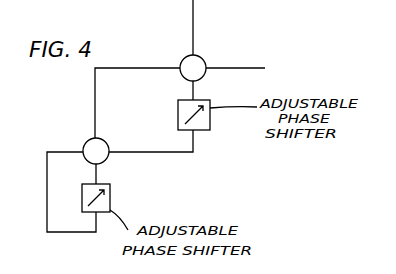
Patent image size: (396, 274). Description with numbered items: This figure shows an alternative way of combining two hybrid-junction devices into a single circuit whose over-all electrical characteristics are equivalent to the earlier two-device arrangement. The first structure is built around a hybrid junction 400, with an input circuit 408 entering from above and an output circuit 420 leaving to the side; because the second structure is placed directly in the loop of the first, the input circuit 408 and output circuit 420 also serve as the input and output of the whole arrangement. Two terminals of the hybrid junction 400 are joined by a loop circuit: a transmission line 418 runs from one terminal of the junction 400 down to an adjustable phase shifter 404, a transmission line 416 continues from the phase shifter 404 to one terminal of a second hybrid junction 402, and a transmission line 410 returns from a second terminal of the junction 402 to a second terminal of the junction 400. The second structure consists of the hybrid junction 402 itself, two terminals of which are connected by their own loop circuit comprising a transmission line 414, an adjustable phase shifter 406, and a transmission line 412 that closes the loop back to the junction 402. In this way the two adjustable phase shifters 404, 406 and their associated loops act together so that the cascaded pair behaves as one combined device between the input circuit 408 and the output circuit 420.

The hybrid junction 400 is at (201, 58).
The hybrid junction 402 is at (112, 135).
The adjustable phase shifter 404 is at (210, 121).
The adjustable phase shifter 406 is at (110, 195).
The input circuit 408 is at (197, 10).
The transmission line 410 is at (133, 65).
The transmission line 412 is at (68, 176).
The transmission line 414 is at (100, 172).
The transmission line 416 is at (175, 152).
The transmission line 418 is at (197, 88).
The output circuit 420 is at (247, 63).